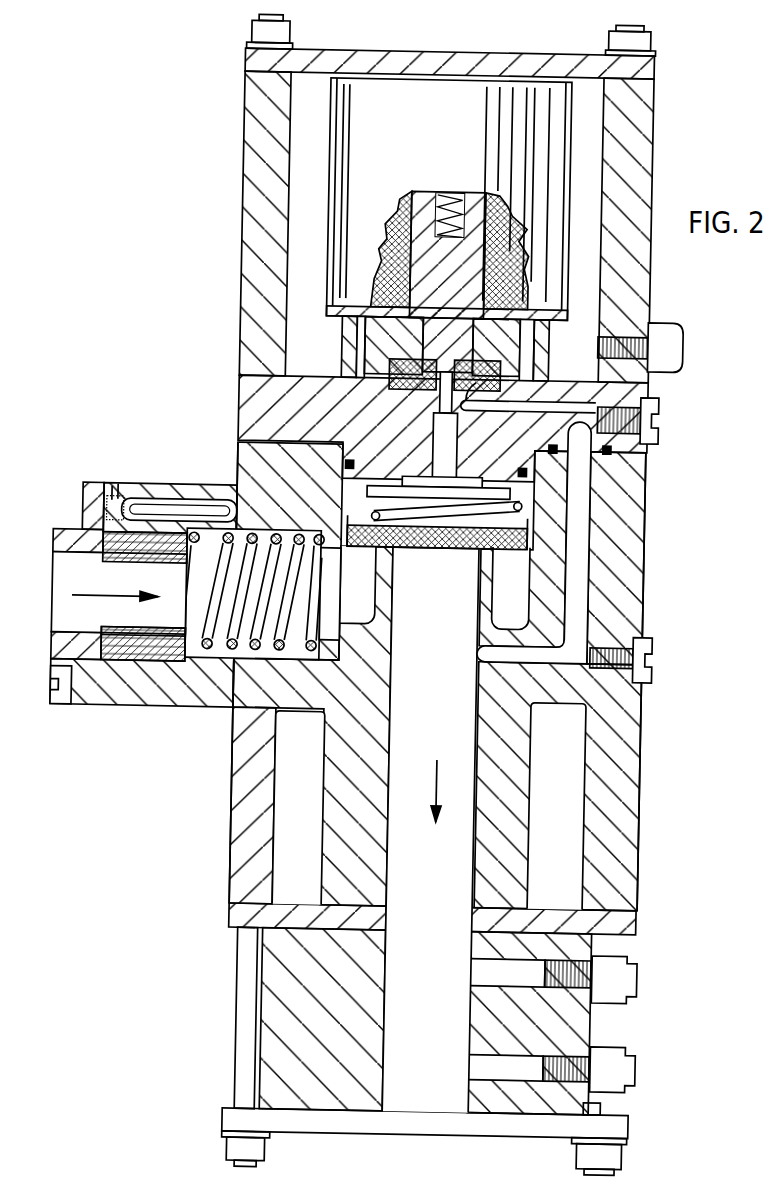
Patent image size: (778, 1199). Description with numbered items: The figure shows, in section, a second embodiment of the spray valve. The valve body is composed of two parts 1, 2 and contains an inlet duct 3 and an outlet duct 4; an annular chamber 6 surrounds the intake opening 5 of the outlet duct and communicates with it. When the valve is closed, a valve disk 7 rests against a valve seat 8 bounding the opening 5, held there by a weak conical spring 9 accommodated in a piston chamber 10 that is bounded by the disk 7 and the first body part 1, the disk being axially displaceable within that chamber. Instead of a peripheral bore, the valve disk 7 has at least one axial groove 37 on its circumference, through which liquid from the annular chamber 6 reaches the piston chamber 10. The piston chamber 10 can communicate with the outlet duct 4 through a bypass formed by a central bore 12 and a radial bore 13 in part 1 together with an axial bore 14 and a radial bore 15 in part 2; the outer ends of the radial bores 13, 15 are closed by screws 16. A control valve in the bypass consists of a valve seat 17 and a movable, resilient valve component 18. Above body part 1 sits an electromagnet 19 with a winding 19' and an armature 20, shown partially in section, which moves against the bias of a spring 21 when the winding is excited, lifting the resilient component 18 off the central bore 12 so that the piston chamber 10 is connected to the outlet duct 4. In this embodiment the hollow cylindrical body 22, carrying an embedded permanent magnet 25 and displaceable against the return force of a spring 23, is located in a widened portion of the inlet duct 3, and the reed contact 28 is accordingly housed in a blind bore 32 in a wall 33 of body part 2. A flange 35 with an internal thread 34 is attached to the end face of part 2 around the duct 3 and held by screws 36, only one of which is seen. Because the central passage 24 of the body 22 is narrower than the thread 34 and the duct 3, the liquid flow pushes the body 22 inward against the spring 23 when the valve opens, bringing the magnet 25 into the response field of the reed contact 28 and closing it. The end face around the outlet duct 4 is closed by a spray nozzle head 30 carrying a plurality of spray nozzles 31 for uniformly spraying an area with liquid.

The first part of valve body 1 is at (245, 407).
The second part of valve body 2 is at (245, 460).
The inlet duct 3 is at (322, 610).
The outlet duct 4 is at (431, 675).
The intake opening 5 is at (477, 548).
The annular chamber 6 is at (525, 598).
The valve disk 7 is at (533, 540).
The valve seat 8 is at (392, 548).
The conical spring 9 is at (527, 512).
The piston chamber 10 is at (535, 498).
The central bore 12 is at (337, 348).
The radial bore 13 is at (532, 416).
The axial bore 14 is at (577, 570).
The radial bore 15 is at (548, 705).
The screws 16 is at (658, 420).
The valve seat 17 is at (555, 303).
The resilient valve component 18 is at (540, 295).
The cup 19 is at (449, 162).
The winding 19' is at (367, 191).
The armature 20 is at (505, 210).
The spring 21 is at (445, 192).
The hollow cylindrical body 22 is at (162, 643).
The spring 23 is at (205, 637).
The central passage 24 is at (140, 634).
The permanent magnet 25 is at (84, 500).
The reed contact 28 is at (190, 498).
The spray nozzle head 30 is at (283, 1022).
The spray nozzles 31 is at (632, 1072).
The blind bore 32 is at (140, 500).
The wall 33 is at (113, 496).
The internal thread 34 is at (83, 634).
The flange 35 is at (84, 545).
The screws 36 is at (64, 711).
The groove 37 is at (535, 530).